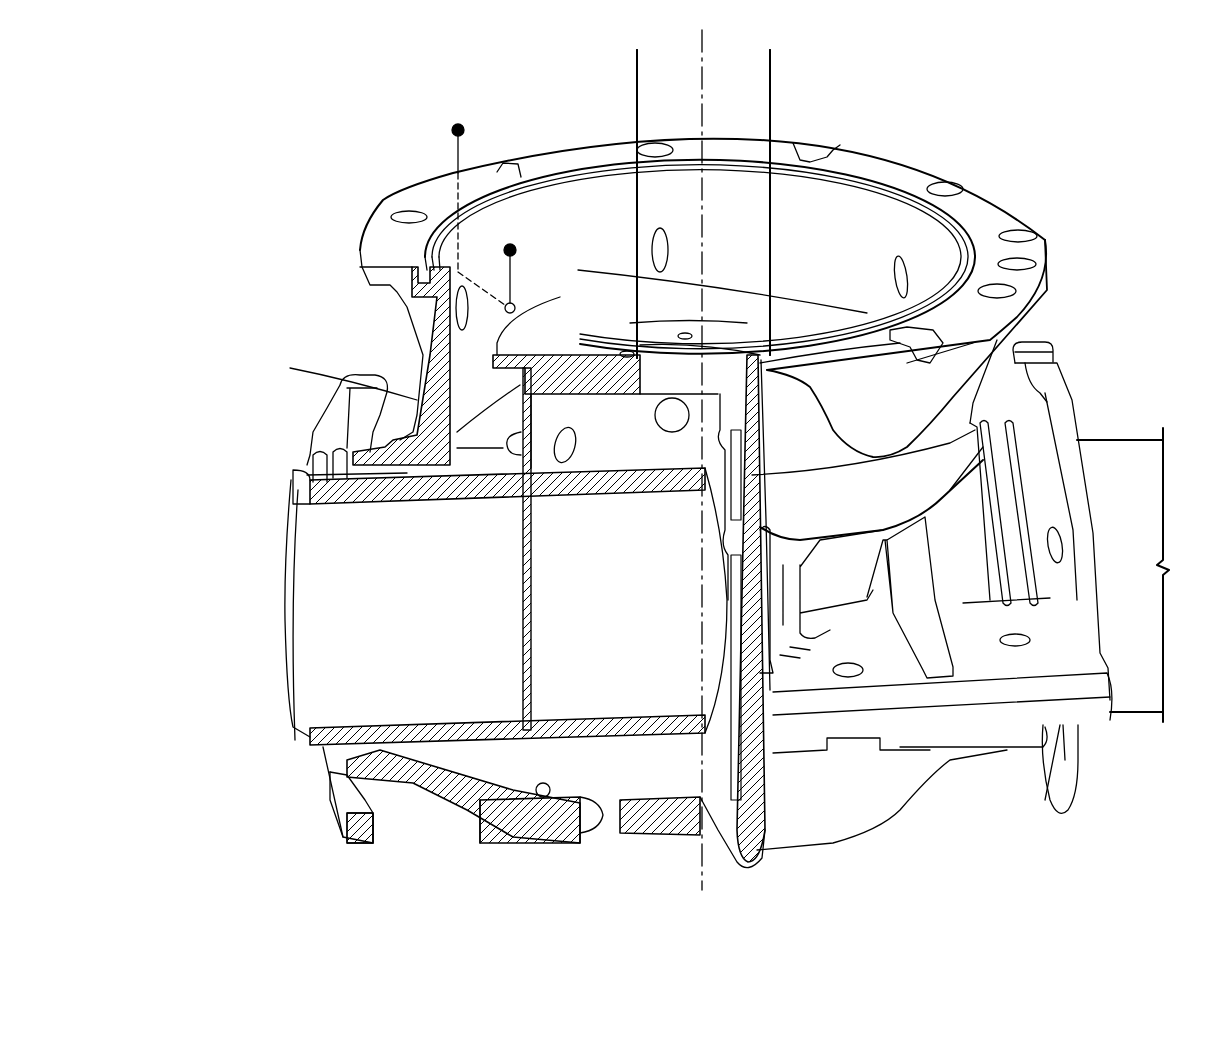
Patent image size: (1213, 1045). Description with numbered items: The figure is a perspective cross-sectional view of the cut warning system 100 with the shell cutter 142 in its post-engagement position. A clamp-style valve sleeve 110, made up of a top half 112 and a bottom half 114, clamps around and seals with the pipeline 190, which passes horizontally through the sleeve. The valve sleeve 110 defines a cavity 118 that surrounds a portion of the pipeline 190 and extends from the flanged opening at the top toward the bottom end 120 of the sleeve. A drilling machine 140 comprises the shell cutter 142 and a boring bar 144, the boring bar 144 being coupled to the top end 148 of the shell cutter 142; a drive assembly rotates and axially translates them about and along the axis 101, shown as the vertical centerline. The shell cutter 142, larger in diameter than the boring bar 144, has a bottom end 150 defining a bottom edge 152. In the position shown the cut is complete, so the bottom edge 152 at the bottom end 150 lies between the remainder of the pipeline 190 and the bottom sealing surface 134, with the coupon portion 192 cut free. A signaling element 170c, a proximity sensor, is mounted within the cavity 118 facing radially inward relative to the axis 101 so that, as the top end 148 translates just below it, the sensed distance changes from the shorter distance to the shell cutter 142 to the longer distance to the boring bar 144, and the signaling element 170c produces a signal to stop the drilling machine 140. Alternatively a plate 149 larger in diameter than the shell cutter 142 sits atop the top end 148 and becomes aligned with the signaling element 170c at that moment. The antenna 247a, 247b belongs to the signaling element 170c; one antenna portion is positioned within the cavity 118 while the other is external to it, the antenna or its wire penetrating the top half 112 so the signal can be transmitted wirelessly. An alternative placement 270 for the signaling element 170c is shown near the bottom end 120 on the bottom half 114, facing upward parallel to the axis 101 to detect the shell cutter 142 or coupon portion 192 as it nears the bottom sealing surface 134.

The pump assembly 100 is at (278, 158).
The axis 101 is at (693, 117).
The valve sleeve 110 is at (888, 162).
The top half 112 is at (1003, 327).
The bottom half 114 is at (1070, 763).
The cavity 118 is at (883, 253).
The bottom end 120 is at (637, 832).
The bottom sealing surface 134 is at (680, 775).
The drilling machine 140 is at (773, 112).
The boring bar 144 is at (703, 204).
The shell cutter 142 is at (403, 438).
The top end 148 is at (427, 378).
The plate 149 is at (590, 300).
The bottom end 150 is at (527, 733).
The bottom edge 152 is at (337, 861).
The signaling element 170c is at (513, 307).
The pipeline 190 is at (305, 605).
The coupon portion 192 is at (680, 688).
The first pin 247a is at (425, 215).
The second pin 247b is at (457, 158).
The alternative placement 270 is at (543, 797).